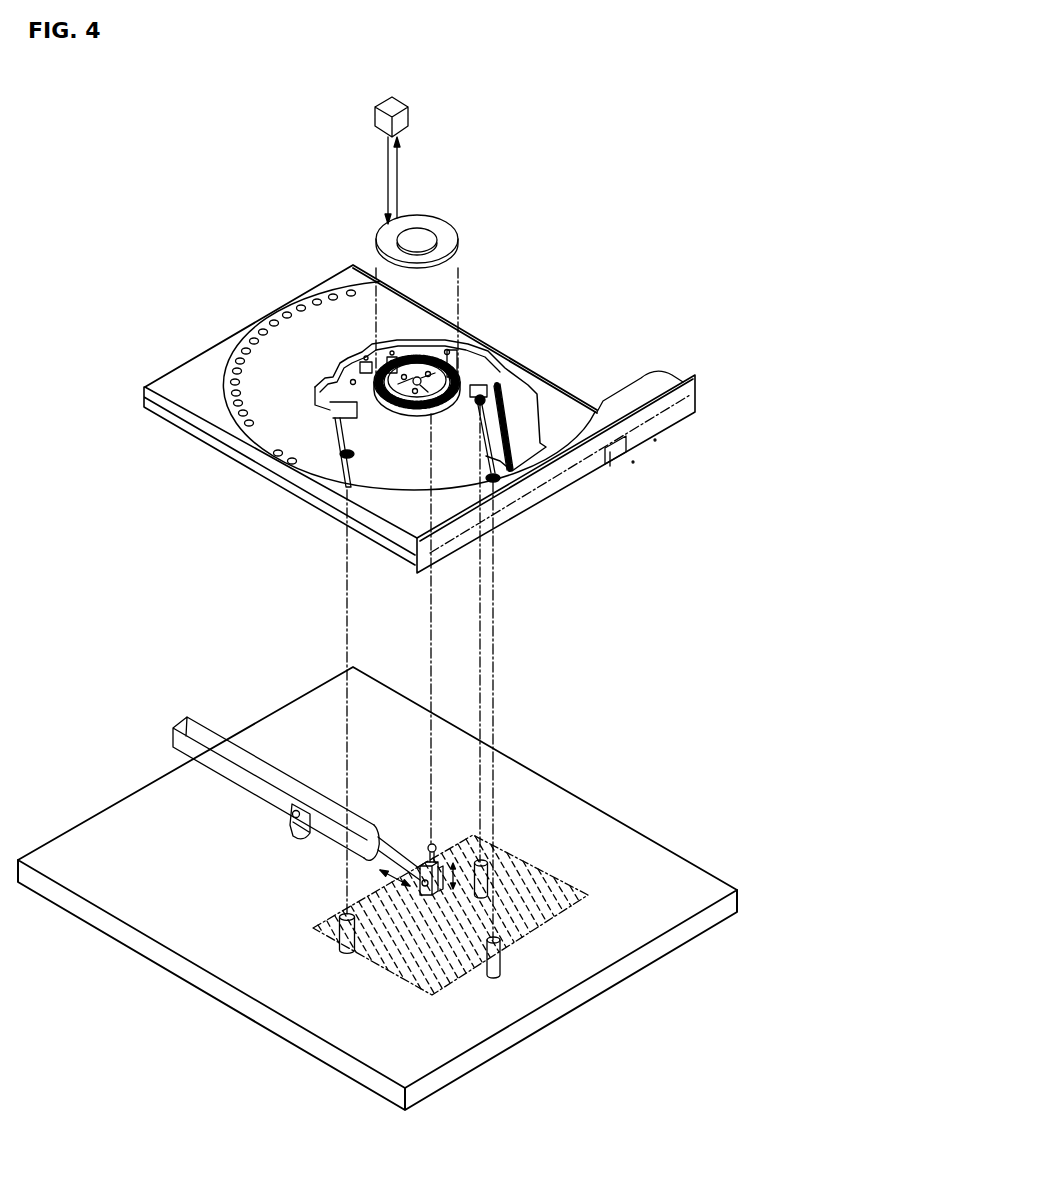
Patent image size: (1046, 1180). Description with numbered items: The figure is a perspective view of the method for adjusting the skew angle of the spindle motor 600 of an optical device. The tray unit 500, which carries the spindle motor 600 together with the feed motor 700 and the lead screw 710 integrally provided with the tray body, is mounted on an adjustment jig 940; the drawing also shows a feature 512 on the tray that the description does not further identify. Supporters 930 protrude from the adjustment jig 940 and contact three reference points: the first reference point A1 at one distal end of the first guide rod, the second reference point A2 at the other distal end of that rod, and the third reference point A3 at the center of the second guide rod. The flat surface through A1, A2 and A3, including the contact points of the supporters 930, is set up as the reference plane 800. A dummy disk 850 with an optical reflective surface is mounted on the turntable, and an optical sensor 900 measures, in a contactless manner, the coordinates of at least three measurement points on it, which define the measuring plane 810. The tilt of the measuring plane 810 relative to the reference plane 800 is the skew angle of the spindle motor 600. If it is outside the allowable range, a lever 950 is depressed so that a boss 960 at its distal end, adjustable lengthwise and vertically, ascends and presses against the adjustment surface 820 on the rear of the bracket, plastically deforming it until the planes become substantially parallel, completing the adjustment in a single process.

The tray unit 500 is at (597, 385).
The holes 512 is at (292, 310).
The spindle motor 600 is at (453, 367).
The feed motor 700 is at (498, 377).
The lead screw 710 is at (503, 406).
The reference plane 800 is at (534, 889).
The measuring plane 810 is at (447, 207).
The adjustment surface 820 is at (380, 425).
The dummy disk 850 is at (447, 223).
The optical sensor 900 is at (392, 104).
The supporters 930 is at (498, 963).
The adjustment jig 940 is at (667, 873).
The lever 950 is at (242, 757).
The boss 960 is at (433, 845).
The first reference point A1 is at (479, 404).
The second reference point A2 is at (495, 481).
The third reference point A3 is at (353, 456).